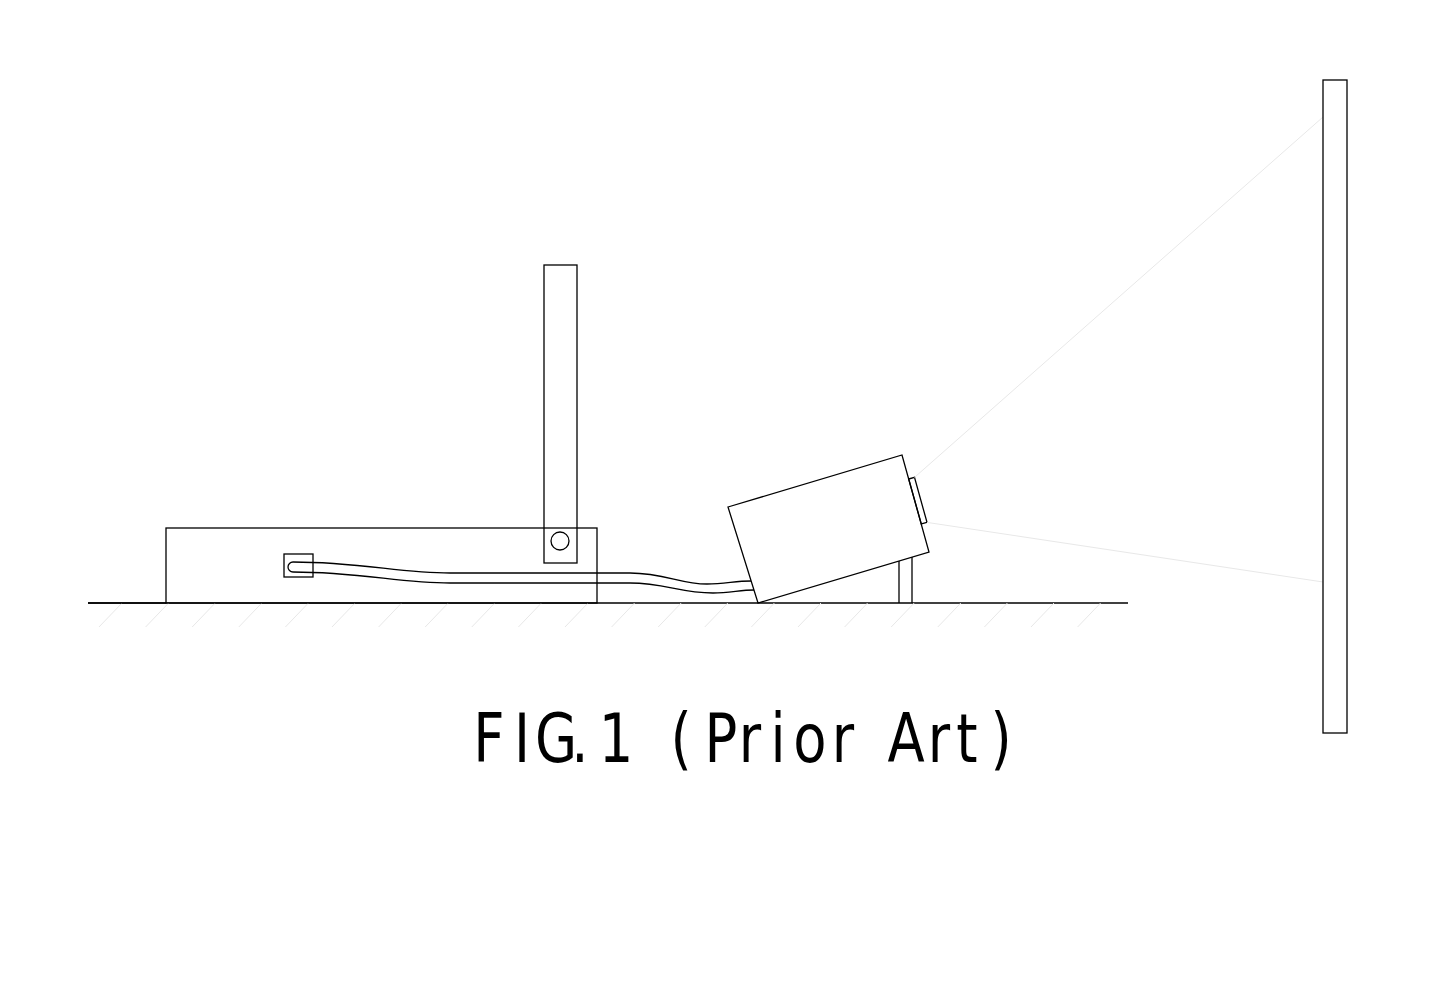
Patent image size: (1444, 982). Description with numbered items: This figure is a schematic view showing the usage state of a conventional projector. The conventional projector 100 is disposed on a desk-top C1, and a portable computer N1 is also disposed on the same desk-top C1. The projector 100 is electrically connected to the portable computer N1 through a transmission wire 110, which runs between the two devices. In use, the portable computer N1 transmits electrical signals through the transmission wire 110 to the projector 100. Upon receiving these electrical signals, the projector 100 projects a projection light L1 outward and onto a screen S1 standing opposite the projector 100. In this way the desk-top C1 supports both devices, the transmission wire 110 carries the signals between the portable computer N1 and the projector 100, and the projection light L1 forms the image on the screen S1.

The desk-top C1 is at (145, 601).
The portable computer N1 is at (377, 488).
The transmission wire 110 is at (680, 572).
The projector 100 is at (843, 457).
The projection light L1 is at (1150, 253).
The screen S1 is at (1340, 93).